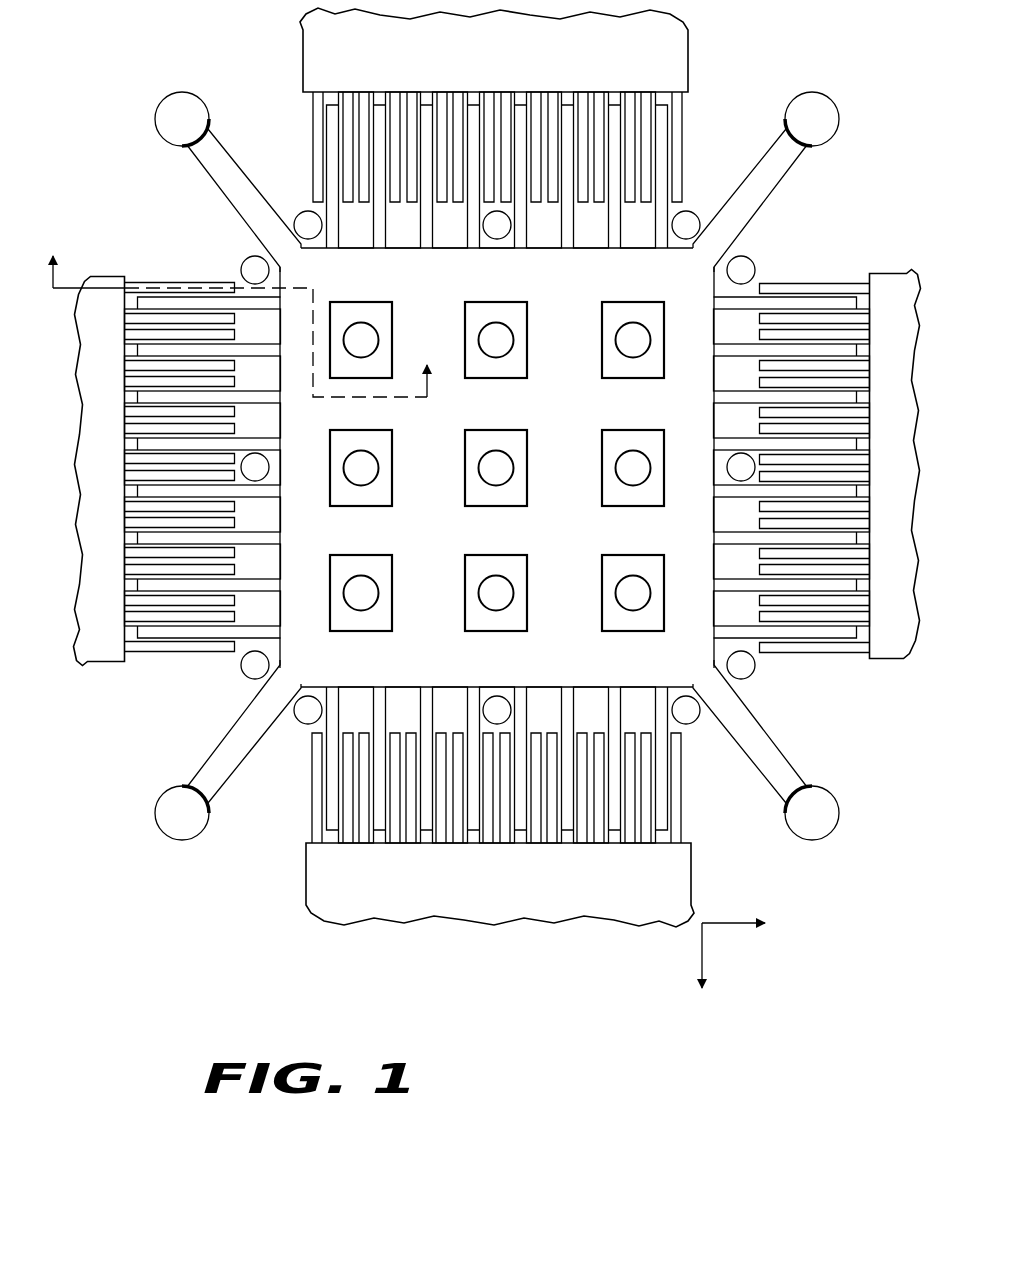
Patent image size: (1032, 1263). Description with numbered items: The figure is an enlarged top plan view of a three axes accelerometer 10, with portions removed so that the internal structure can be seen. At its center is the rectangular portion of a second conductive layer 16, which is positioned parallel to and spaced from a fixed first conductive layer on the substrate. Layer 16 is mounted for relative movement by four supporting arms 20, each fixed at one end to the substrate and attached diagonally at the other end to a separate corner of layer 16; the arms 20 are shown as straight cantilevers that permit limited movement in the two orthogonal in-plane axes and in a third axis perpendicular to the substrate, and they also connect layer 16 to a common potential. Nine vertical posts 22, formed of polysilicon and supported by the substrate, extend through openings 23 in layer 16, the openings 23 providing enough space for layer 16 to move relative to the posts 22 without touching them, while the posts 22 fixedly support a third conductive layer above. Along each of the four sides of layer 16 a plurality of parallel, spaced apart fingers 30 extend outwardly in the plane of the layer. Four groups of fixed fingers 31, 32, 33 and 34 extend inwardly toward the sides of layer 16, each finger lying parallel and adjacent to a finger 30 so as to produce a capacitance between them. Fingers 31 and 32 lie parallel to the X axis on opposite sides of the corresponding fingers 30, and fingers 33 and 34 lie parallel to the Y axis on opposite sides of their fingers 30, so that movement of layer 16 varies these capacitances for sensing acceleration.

The three axes accelerometer 10 is at (284, 967).
The second conductive layer 16 is at (312, 663).
The supporting arms 20 is at (232, 208).
The vertical posts 22 is at (483, 592).
The openings 23 is at (605, 452).
The fingers 30 is at (520, 107).
The fingers 31 is at (412, 92).
The fingers 32 is at (677, 92).
The fingers 33 is at (123, 410).
The fingers 34 is at (127, 647).